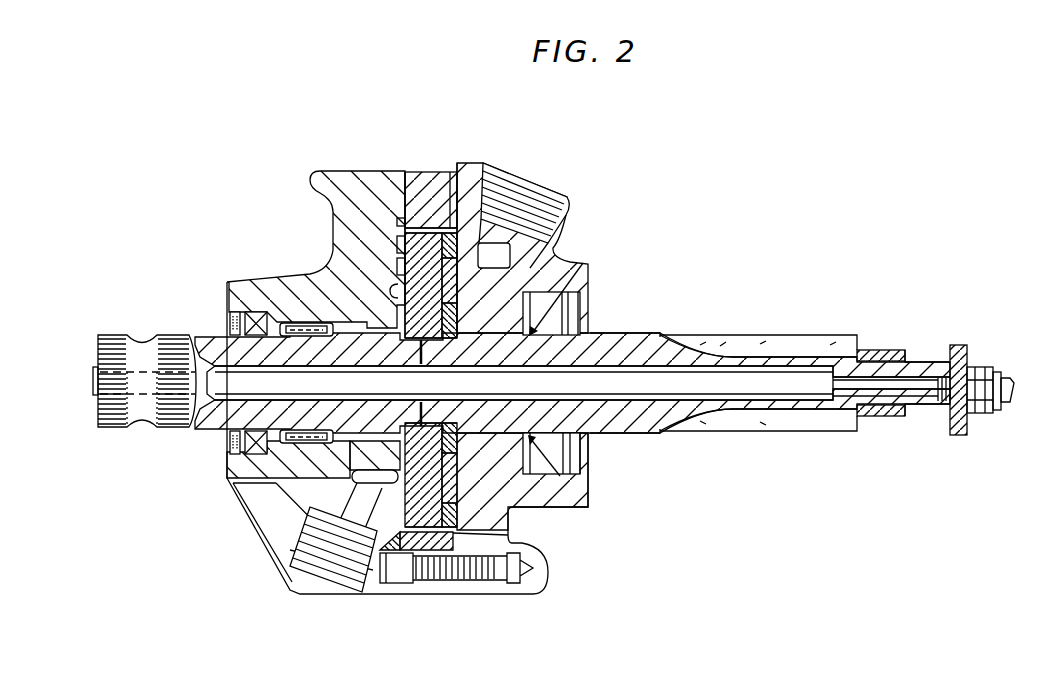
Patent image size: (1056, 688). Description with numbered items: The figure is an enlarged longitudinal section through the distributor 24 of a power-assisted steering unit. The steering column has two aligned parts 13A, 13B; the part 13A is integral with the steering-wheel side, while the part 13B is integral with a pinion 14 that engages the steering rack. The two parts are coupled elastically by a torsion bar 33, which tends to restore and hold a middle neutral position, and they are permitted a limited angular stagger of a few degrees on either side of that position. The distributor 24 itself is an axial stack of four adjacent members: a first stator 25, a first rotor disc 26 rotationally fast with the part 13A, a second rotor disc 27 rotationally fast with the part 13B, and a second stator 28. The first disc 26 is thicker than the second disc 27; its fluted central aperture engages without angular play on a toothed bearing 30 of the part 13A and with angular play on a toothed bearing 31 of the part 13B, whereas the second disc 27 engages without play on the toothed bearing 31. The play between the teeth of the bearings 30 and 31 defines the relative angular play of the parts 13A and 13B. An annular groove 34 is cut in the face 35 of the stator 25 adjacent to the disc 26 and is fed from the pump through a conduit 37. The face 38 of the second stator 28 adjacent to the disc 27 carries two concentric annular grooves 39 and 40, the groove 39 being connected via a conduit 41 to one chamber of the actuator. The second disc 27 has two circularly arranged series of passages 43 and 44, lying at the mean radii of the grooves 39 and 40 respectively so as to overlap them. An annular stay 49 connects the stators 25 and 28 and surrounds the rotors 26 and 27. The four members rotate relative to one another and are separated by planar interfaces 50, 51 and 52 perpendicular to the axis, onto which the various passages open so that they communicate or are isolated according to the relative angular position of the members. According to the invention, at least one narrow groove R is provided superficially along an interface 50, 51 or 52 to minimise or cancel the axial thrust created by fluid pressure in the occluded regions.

The first part of the steering column 13A is at (182, 330).
The second part of the steering column 13B is at (631, 330).
The pinion 14 is at (797, 345).
The distributor 24 is at (496, 604).
The first stator 25 is at (345, 183).
The first rotor disc 26 is at (397, 247).
The second rotor disc 27 is at (397, 268).
The second stator 28 is at (464, 152).
The toothed bearing of part 13A 30 is at (385, 360).
The toothed bearing of part 13B 31 is at (460, 444).
The torsion bar 33 is at (227, 390).
The annular groove 34 is at (397, 470).
The face of the stator 35 is at (405, 172).
The conduit 37 is at (287, 573).
The face of the second stator 38 is at (450, 172).
The annular groove 39 is at (462, 266).
The annular groove 40 is at (457, 495).
The conduit 41 is at (540, 190).
The passages of the first series 43 is at (458, 514).
The passages of the second series 44 is at (464, 302).
The annular stay 49 is at (430, 172).
The planar interface 50 is at (390, 291).
The planar interface 51 is at (438, 234).
The planar interface 52 is at (466, 240).
The narrow groove R is at (466, 258).